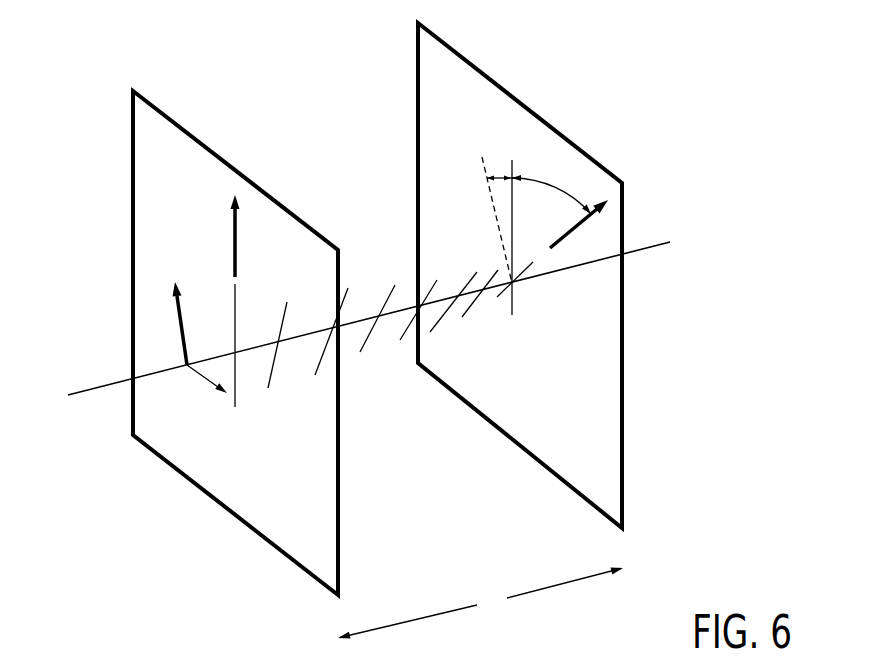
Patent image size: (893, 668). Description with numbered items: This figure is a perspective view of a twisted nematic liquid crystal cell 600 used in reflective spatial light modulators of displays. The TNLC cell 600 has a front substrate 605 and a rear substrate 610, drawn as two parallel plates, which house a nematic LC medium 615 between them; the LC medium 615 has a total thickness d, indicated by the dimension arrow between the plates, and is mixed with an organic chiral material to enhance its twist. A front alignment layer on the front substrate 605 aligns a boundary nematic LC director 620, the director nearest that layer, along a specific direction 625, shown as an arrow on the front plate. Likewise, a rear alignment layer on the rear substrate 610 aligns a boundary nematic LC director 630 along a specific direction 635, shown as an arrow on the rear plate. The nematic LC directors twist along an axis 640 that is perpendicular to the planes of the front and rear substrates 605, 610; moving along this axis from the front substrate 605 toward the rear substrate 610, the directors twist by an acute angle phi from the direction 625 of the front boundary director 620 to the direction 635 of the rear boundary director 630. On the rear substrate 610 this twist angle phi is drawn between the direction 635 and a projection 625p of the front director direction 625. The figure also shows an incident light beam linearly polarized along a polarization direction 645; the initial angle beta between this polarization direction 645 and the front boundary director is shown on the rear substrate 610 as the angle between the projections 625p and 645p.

The TNLC cell 600 is at (679, 503).
The front substrate 605 is at (313, 562).
The rear substrate 610 is at (595, 495).
The nematic LC medium 615 is at (448, 511).
The boundary nematic LC director 620 is at (237, 391).
The direction of front boundary LC director 625 is at (230, 254).
The projection of front boundary LC director direction 625p is at (527, 161).
The boundary nematic LC director 630 is at (499, 310).
The direction of rear boundary LC director 635 is at (570, 237).
The twist axis 640 is at (100, 384).
The polarization direction 645 is at (180, 325).
The projection of incident light polarization direction 645p is at (497, 228).